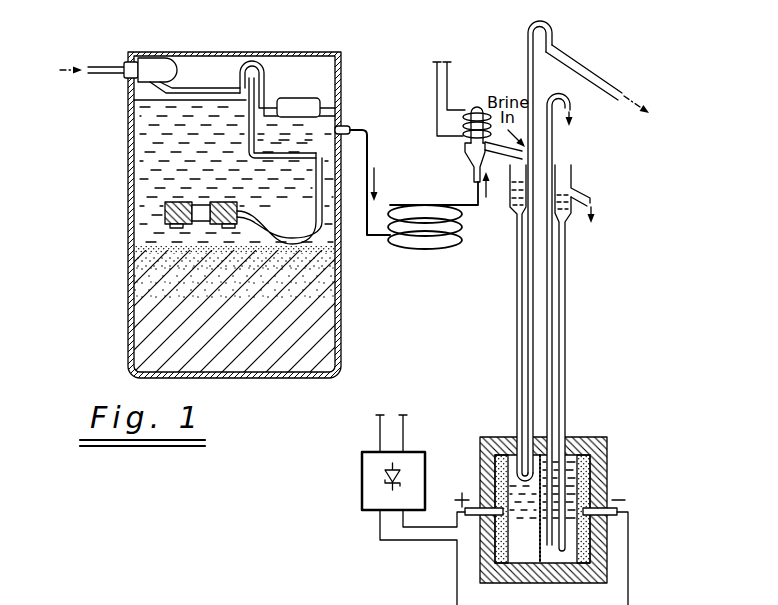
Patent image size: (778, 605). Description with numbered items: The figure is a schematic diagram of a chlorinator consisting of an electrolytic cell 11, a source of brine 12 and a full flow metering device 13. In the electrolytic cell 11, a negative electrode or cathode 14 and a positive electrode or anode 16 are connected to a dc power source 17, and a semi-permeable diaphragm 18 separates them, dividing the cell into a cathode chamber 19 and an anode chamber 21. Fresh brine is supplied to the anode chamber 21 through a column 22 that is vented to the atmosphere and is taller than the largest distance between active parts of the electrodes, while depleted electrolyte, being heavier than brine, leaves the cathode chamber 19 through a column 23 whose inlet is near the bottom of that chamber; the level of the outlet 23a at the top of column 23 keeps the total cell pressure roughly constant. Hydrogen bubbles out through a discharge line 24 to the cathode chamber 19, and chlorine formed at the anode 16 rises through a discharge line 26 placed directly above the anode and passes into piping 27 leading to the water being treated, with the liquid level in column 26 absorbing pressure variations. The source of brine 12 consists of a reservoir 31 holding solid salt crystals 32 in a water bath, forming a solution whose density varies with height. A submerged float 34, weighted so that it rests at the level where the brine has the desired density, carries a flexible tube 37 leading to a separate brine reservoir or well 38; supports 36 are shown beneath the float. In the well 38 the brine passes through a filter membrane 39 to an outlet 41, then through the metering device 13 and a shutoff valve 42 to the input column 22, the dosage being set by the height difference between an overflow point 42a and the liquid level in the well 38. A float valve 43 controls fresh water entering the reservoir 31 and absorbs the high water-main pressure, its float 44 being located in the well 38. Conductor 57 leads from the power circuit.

The electrolytic cell 11 is at (538, 313).
The source of brine 12 is at (191, 215).
The full flow metering device 13 is at (421, 259).
The cathode 14 is at (584, 495).
The anode 16 is at (505, 478).
The dc power source 17 is at (362, 482).
The diaphragm 18 is at (540, 527).
The cathode chamber 19 is at (552, 546).
The anode chamber 21 is at (524, 546).
The column 22 is at (517, 334).
The column 23 is at (567, 413).
The outlet for depleted electrolyte 23a is at (594, 196).
The discharge line 24 is at (553, 388).
The discharge line 26 is at (527, 82).
The piping 27 is at (598, 78).
The reservoir 31 is at (128, 168).
The salt crystals 32 is at (165, 308).
The submerged float 34 is at (166, 210).
The valve supports 36 is at (176, 225).
The flexible tube 37 is at (316, 197).
The brine reservoir or well 38 is at (247, 134).
The filter membrane 39 is at (294, 147).
The outlet 41 is at (345, 127).
The shutoff valve 42 is at (456, 163).
The overflow point 42a is at (493, 155).
The float valve 43 is at (170, 68).
The float 44 is at (300, 98).
The conductor 57 is at (357, 604).